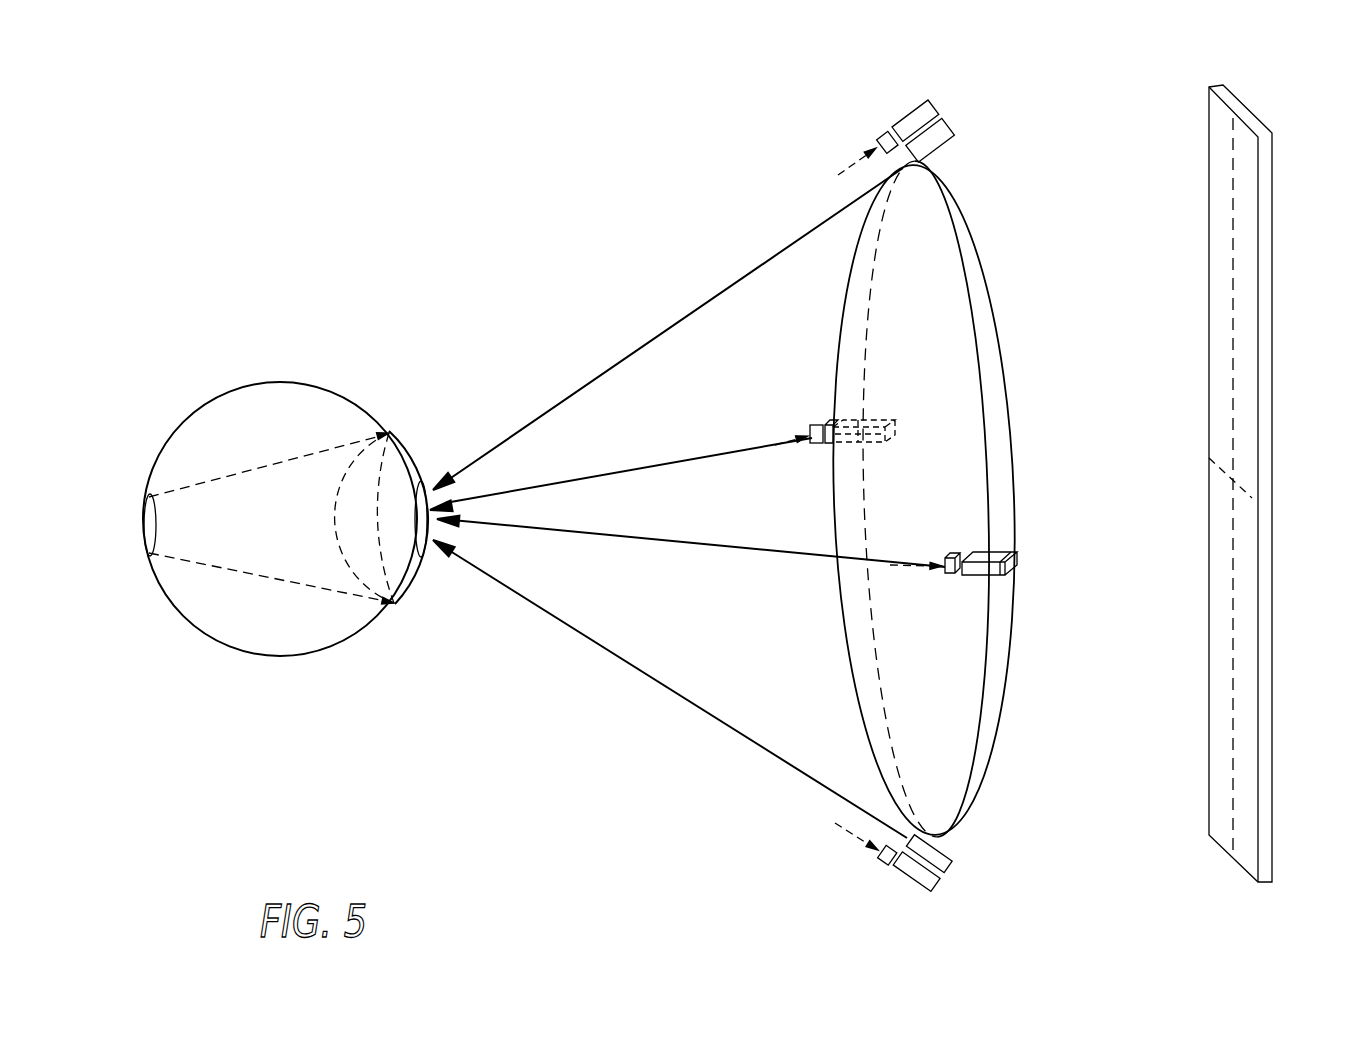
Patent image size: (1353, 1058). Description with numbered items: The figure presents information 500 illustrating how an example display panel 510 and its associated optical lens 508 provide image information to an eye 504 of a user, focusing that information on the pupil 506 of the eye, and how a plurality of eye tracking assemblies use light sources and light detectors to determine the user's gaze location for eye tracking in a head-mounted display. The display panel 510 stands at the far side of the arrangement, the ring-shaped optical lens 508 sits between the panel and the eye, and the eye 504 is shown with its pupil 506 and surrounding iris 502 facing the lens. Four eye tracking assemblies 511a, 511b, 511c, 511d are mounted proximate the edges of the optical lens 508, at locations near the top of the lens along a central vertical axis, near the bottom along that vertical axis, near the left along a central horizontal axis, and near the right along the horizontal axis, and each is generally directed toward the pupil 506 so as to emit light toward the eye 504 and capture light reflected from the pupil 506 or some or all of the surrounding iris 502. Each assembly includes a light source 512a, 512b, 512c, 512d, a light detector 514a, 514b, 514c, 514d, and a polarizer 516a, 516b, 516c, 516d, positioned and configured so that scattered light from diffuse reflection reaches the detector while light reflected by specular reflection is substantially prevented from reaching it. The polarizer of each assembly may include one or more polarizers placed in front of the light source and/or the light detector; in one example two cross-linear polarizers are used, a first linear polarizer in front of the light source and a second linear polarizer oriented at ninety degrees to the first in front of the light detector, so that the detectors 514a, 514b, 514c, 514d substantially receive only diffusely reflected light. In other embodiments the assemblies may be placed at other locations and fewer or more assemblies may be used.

The information 500 is at (326, 164).
The iris 502 is at (407, 456).
The eye 504 is at (273, 382).
The pupil 506 is at (420, 584).
The optical lens 508 is at (1000, 323).
The display panel 510 is at (1240, 100).
The eye tracking assembly 511a is at (915, 132).
The eye tracking assembly 511b is at (997, 562).
The eye tracking assembly 511c is at (805, 404).
The eye tracking assembly 511d is at (921, 873).
The light source 512a is at (947, 152).
The light source 512b is at (1012, 558).
The light source 512c is at (845, 450).
The light source 512d is at (954, 862).
The light detector 514a is at (936, 108).
The light detector 514b is at (1002, 578).
The light detector 514c is at (829, 421).
The light detector 514d is at (941, 883).
The polarizer 516a is at (879, 136).
The polarizer 516b is at (952, 578).
The polarizer 516c is at (806, 430).
The polarizer 516d is at (879, 861).